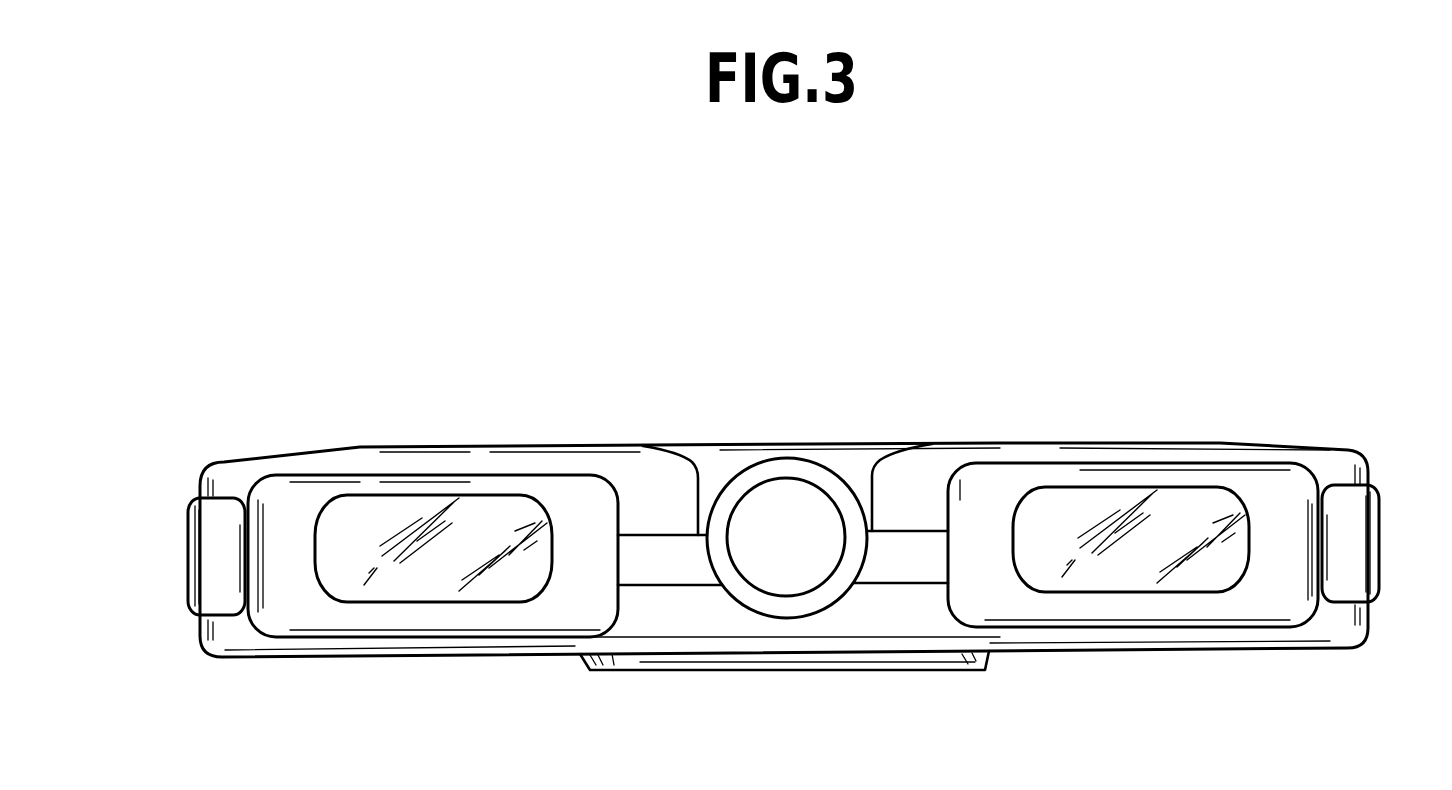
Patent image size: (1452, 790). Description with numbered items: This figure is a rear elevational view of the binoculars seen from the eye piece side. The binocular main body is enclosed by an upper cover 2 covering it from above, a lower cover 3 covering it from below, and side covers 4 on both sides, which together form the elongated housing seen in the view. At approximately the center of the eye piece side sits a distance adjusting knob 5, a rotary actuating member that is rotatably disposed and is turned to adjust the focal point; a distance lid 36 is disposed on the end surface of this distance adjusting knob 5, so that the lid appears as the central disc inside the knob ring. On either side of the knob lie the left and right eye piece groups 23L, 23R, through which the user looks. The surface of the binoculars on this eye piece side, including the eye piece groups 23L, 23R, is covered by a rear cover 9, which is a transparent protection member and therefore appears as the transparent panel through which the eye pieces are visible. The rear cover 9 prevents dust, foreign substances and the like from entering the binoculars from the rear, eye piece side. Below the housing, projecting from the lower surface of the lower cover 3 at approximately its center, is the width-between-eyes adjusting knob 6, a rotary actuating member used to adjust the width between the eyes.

The upper cover 2 is at (1198, 453).
The lower cover 3 is at (1338, 630).
The side cover 4 is at (206, 556).
The distance adjusting knob 5 is at (798, 470).
The width-between-eyes adjusting knob 6 is at (937, 660).
The rear cover 9 is at (440, 620).
The left eye piece group 23L is at (466, 512).
The right eye piece group 23R is at (1087, 507).
The distance lid 36 is at (790, 567).